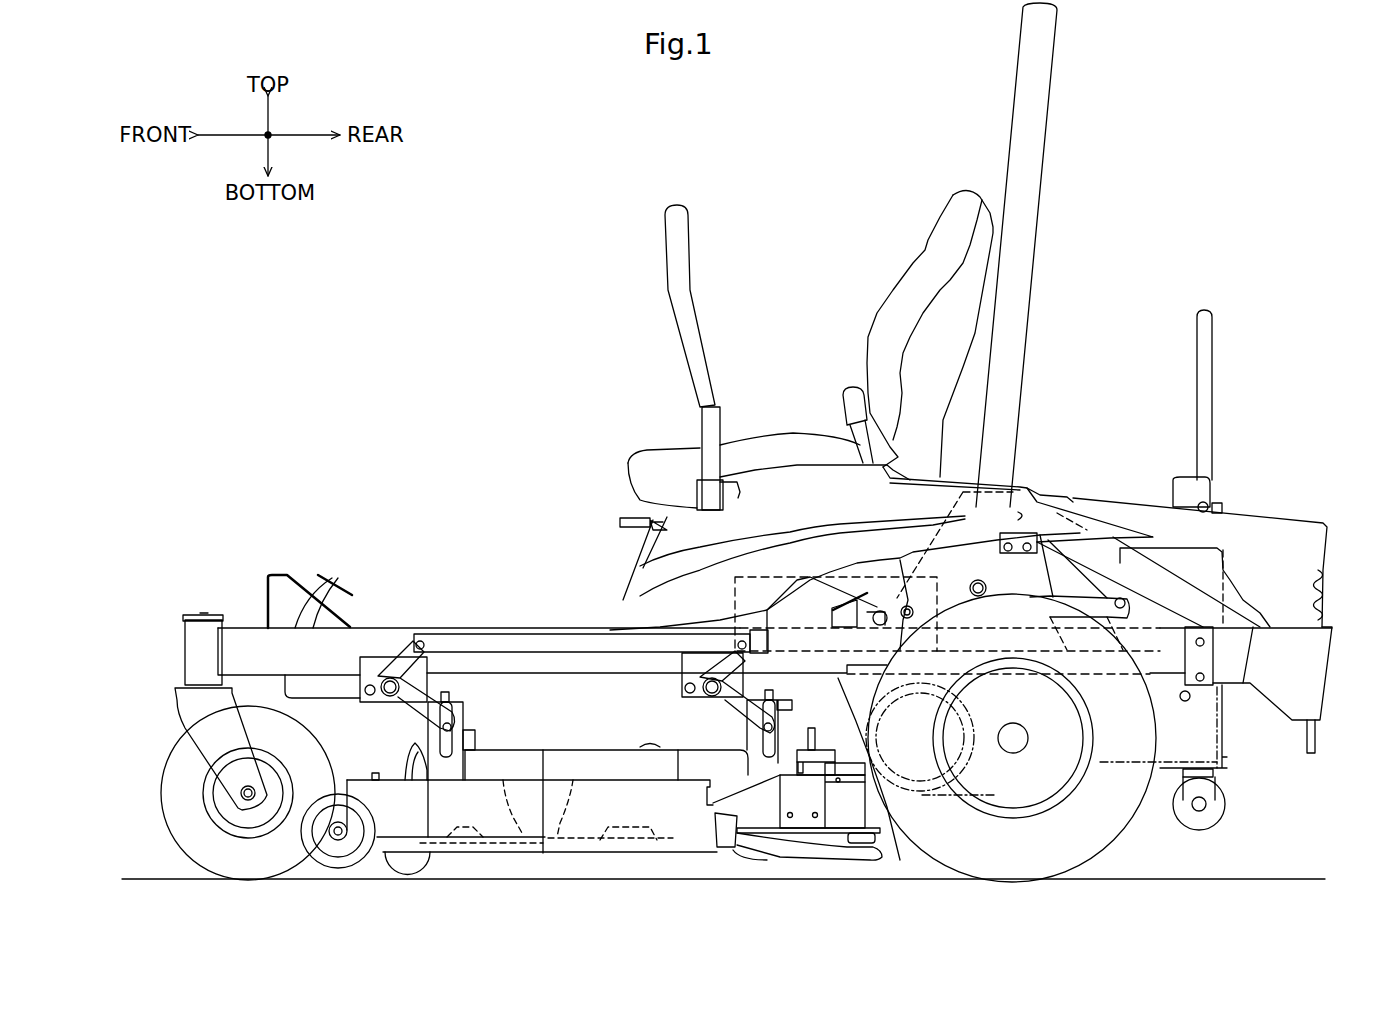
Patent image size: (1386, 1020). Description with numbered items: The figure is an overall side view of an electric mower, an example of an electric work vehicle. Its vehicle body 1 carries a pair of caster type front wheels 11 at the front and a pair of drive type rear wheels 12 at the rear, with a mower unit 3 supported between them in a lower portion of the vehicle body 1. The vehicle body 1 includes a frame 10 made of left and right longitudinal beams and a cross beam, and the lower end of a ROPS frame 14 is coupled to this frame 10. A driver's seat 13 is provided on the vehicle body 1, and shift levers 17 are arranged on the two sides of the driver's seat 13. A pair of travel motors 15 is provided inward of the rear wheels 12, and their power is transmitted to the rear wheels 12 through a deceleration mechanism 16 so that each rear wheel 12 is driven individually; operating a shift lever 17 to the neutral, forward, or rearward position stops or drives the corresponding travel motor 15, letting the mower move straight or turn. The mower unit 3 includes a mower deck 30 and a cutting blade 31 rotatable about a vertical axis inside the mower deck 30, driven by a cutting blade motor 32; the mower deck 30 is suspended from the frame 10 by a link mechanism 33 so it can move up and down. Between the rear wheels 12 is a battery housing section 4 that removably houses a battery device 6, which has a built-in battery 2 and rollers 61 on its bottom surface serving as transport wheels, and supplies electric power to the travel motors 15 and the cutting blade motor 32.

The vehicle body 1 is at (734, 464).
The battery 2 is at (1283, 690).
The mower unit 3 is at (600, 801).
The battery housing section 4 is at (968, 480).
The battery device 6 is at (1193, 706).
The frame 10 is at (757, 622).
The front wheel 11 is at (225, 784).
The rear wheel 12 is at (1026, 738).
The driver's seat 13 is at (846, 395).
The ROPS frame 14 is at (1051, 255).
The travel motor 15 is at (947, 728).
The deceleration mechanism 16 is at (941, 775).
The shift lever 17 is at (652, 357).
The mower deck 30 is at (481, 846).
The cutting blade 31 is at (599, 846).
The cutting blade motor 32 is at (807, 801).
The link mechanism 33 is at (567, 648).
The roller 61 is at (1231, 813).